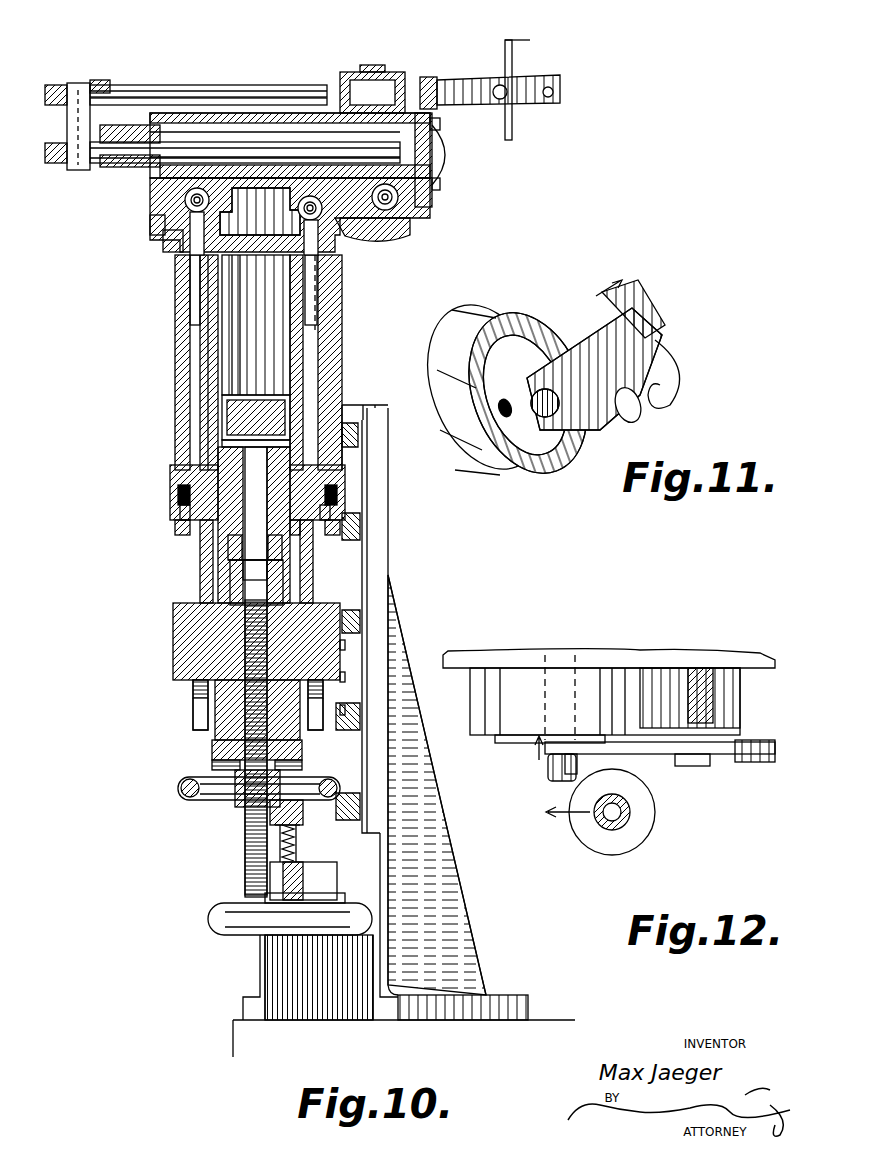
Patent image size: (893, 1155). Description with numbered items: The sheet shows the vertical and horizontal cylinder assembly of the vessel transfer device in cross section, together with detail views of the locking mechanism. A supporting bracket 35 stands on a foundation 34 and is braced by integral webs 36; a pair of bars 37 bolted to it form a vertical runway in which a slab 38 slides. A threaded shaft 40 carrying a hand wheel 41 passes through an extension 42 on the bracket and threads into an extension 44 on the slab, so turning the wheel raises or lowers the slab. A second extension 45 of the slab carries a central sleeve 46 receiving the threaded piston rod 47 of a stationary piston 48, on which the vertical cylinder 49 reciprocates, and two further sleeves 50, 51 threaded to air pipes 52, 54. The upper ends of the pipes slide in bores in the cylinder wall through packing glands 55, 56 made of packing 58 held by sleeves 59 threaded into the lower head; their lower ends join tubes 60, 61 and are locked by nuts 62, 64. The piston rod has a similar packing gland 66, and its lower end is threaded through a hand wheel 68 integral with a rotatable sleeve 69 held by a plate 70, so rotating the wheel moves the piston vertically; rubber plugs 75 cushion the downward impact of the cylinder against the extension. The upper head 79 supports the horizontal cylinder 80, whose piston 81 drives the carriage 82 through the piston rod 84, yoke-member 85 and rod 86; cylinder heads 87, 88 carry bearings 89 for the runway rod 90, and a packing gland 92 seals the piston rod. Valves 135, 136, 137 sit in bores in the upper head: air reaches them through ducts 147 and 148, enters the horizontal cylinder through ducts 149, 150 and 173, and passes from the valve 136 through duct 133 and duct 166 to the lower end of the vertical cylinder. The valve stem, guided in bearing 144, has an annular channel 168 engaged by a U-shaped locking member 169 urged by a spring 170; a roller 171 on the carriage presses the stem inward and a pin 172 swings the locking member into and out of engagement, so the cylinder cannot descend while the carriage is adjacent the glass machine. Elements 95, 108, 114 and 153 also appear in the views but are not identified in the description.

In FIG. 10, the foundation 34 is at (233, 1047).
In FIG. 10, the supporting bracket 35 is at (528, 1000).
In FIG. 10, the integral webs 36 is at (438, 848).
In FIG. 10, the bars 37 is at (352, 549).
In FIG. 10, the slab 38 is at (367, 752).
In FIG. 10, the threaded shaft 40 is at (282, 851).
In FIG. 10, the hand wheel 41 is at (222, 938).
In FIG. 10, the extension 42 is at (275, 879).
In FIG. 10, the extension 44 is at (313, 805).
In FIG. 10, the second extension 45 is at (230, 651).
In FIG. 10, the central sleeve 46 is at (215, 722).
In FIG. 10, the piston rod 47 is at (245, 819).
In FIG. 10, the stationary piston 48 is at (233, 431).
In FIG. 10, the vertical cylinder 49 is at (233, 354).
In FIG. 10, the sleeve 50 is at (185, 613).
In FIG. 10, the sleeve 51 is at (340, 645).
In FIG. 10, the air pipe 52 is at (230, 573).
In FIG. 10, the air pipe 54 is at (388, 578).
In FIG. 10, the packing gland 55 is at (180, 515).
In FIG. 10, the packing gland 56 is at (350, 501).
In FIG. 10, the packing 58 is at (180, 492).
In FIG. 10, the sleeves 59 is at (178, 530).
In FIG. 10, the tube 60 is at (193, 718).
In FIG. 10, the tube 61 is at (340, 711).
In FIG. 10, the nut 62 is at (193, 690).
In FIG. 10, the nut 64 is at (340, 678).
In FIG. 10, the packing gland 66 is at (228, 546).
In FIG. 10, the hand wheel 68 is at (178, 786).
In FIG. 10, the rotatable sleeve 69 is at (240, 769).
In FIG. 10, the plate 70 is at (330, 764).
In FIG. 10, the rubber plugs 75 is at (245, 577).
In FIG. 10, the upper head 79 is at (260, 211).
In FIG. 10, the horizontal cylinder 80 is at (265, 115).
In FIG. 12, the horizontal cylinder 80 is at (668, 652).
In FIG. 10, the piston 81 is at (405, 143).
In FIG. 10, the carriage 82 is at (417, 73).
In FIG. 10, the piston rod 84 is at (215, 150).
In FIG. 10, the yoke-member 85 is at (75, 131).
In FIG. 10, the rod 86 is at (150, 90).
In FIG. 10, the cylinder head 87 is at (147, 190).
In FIG. 10, the cylinder head 88 is at (447, 160).
In FIG. 10, the bearings 89 is at (98, 80).
In FIG. 10, the rod 90 is at (185, 98).
In FIG. 10, the packing gland 92 is at (137, 183).
In FIG. 10, the lug 95 is at (440, 125).
In FIG. 10, the arm 108 is at (475, 85).
In FIG. 10, the plate 114 is at (512, 52).
In FIG. 10, the duct 133 is at (318, 323).
In FIG. 10, the valve 135 is at (192, 215).
In FIG. 10, the valve 136 is at (343, 217).
In FIG. 11, the valve 136 is at (508, 415).
In FIG. 12, the valve 136 is at (537, 757).
In FIG. 10, the valve 137 is at (395, 210).
In FIG. 11, the bearing 144 is at (520, 420).
In FIG. 12, the bearing 144 is at (570, 775).
In FIG. 10, the duct 147 is at (183, 256).
In FIG. 10, the duct 148 is at (362, 212).
In FIG. 10, the duct 149 is at (157, 213).
In FIG. 10, the duct 150 is at (410, 232).
In FIG. 10, the step 153 is at (140, 207).
In FIG. 10, the duct 166 is at (350, 406).
In FIG. 11, the annular channel 168 is at (545, 420).
In FIG. 12, the annular channel 168 is at (555, 770).
In FIG. 11, the locking member 169 is at (600, 415).
In FIG. 12, the locking member 169 is at (660, 755).
In FIG. 11, the spring 170 is at (680, 395).
In FIG. 12, the spring 170 is at (770, 760).
In FIG. 12, the roller 171 is at (615, 855).
In FIG. 11, the pin 172 is at (665, 300).
In FIG. 10, the duct 173 is at (432, 192).